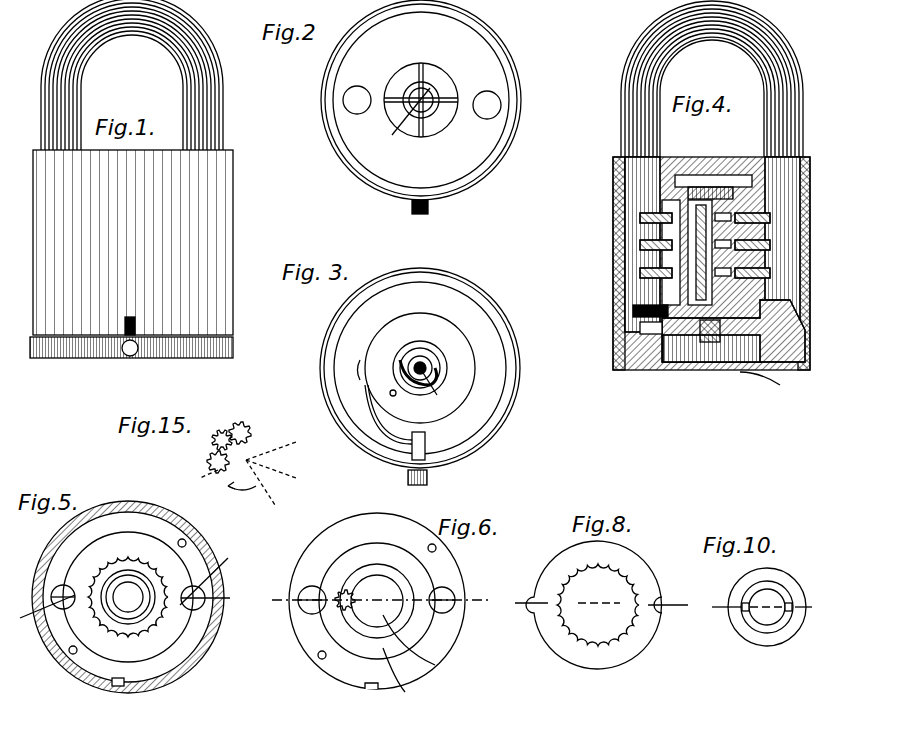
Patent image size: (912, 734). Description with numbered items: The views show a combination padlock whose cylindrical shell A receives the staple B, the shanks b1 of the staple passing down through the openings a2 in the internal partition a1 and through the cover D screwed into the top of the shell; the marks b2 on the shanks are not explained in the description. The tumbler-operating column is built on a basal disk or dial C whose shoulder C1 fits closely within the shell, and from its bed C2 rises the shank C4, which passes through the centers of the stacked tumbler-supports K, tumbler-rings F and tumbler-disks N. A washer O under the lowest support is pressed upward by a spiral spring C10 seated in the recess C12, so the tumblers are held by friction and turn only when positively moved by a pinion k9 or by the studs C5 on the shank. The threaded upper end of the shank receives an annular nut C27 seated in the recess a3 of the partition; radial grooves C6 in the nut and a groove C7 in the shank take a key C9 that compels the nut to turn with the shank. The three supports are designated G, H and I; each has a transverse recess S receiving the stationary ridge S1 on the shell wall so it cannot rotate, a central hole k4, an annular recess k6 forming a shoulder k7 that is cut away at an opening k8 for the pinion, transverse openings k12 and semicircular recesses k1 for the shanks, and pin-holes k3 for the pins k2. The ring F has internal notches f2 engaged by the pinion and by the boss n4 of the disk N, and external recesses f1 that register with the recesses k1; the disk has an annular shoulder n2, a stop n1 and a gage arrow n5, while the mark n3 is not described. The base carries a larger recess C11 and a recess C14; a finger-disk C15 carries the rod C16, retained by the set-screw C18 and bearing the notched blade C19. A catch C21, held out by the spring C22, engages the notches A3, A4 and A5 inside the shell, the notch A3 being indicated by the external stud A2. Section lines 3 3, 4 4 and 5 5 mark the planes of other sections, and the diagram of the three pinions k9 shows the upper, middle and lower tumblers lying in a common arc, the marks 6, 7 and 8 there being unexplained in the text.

In FIG. 1, the shell A is at (207, 220).
In FIG. 1, the stud A2 is at (126, 340).
In FIG. 2, the stud A2 is at (410, 210).
In FIG. 2, the notch A3 is at (330, 118).
In FIG. 2, the notch A4 is at (355, 172).
In FIG. 2, the notch A5 is at (420, 193).
In FIG. 1, the staple B is at (198, 71).
In FIG. 4, the staple B is at (760, 50).
In FIG. 4, the shanks b1 is at (640, 184).
In FIG. 4, the shackle notches b2 is at (770, 216).
In FIG. 1, the basal disk C is at (158, 350).
In FIG. 3, the basal disk C is at (505, 410).
In FIG. 4, the basal disk C is at (620, 360).
In FIG. 3, the shoulder C1 is at (462, 282).
In FIG. 4, the shoulder C1 is at (800, 355).
In FIG. 3, the bed C2 is at (420, 368).
In FIG. 3, the shank C4 is at (432, 370).
In FIG. 4, the shank C4 is at (633, 320).
In FIG. 3, the studs C5 is at (433, 391).
In FIG. 2, the grooves C6 is at (388, 103).
In FIG. 2, the groove C7 is at (428, 95).
In FIG. 2, the key C9 is at (421, 65).
In FIG. 4, the key C9 is at (735, 175).
In FIG. 4, the spiral spring C10 is at (655, 355).
In FIG. 4, the larger recess C11 is at (640, 338).
In FIG. 3, the recess C12 is at (405, 355).
In FIG. 4, the recess C12 is at (637, 355).
In FIG. 4, the recess C14 is at (722, 178).
In FIG. 4, the finger-disk C15 is at (700, 360).
In FIG. 3, the rod C16 is at (428, 358).
In FIG. 4, the rod C16 is at (735, 355).
In FIG. 2, the set-screw C18 is at (397, 127).
In FIG. 3, the blade C19 is at (397, 402).
In FIG. 1, the catch C21 is at (128, 354).
In FIG. 2, the catch C21 is at (436, 213).
In FIG. 3, the catch C21 is at (425, 445).
In FIG. 3, the spring C22 is at (372, 392).
In FIG. 2, the annular nut C27 is at (405, 78).
In FIG. 4, the annular nut C27 is at (680, 178).
In FIG. 2, the partition a1 is at (421, 117).
In FIG. 4, the partition a1 is at (660, 208).
In FIG. 2, the openings a2 is at (422, 103).
In FIG. 2, the recess a3 is at (432, 70).
In FIG. 4, the cover D is at (660, 170).
In FIG. 4, the tumbler-support G is at (640, 220).
In FIG. 4, the tumbler-support H is at (640, 245).
In FIG. 4, the tumbler-support I is at (640, 275).
In FIG. 4, the washer O is at (762, 393).
In FIG. 5, the tumbler-support K is at (128, 520).
In FIG. 6, the tumbler-support K is at (352, 530).
In FIG. 5, the recesses k1 is at (40, 575).
In FIG. 5, the pins k2 is at (185, 540).
In FIG. 5, the pin-holes k3 is at (195, 545).
In FIG. 6, the pin-holes k3 is at (428, 550).
In FIG. 5, the central hole k4 is at (212, 598).
In FIG. 6, the central hole k4 is at (402, 630).
In FIG. 6, the annular recess k6 is at (400, 676).
In FIG. 6, the annular shoulder k7 is at (405, 615).
In FIG. 6, the opening k8 is at (345, 612).
In FIG. 15, the pinion k9 is at (222, 430).
In FIG. 6, the transverse openings k12 is at (310, 605).
In FIG. 5, the tumbler-ring F is at (140, 650).
In FIG. 8, the tumbler-ring F is at (555, 565).
In FIG. 5, the recesses f1 is at (128, 589).
In FIG. 8, the recesses f1 is at (660, 605).
In FIG. 8, the notches f2 is at (625, 575).
In FIG. 5, the tumbler-disk N is at (150, 620).
In FIG. 10, the tumbler-disk N is at (748, 630).
In FIG. 10, the stop n1 is at (783, 618).
In FIG. 10, the annular shoulder n2 is at (763, 633).
In FIG. 10, the lug n3 is at (745, 610).
In FIG. 10, the stud n4 is at (792, 610).
In FIG. 10, the arrow n5 is at (800, 595).
In FIG. 5, the recess S is at (115, 688).
In FIG. 6, the recess S is at (368, 689).
In FIG. 5, the ridge S1 is at (122, 688).
In FIG. 6, the section line 3 is at (379, 600).
In FIG. 8, the section line 4 is at (600, 604).
In FIG. 10, the section line 5 is at (763, 609).
In FIG. 15, the position line 6 is at (246, 460).
In FIG. 15, the position line 7 is at (213, 445).
In FIG. 15, the position line 8 is at (220, 432).